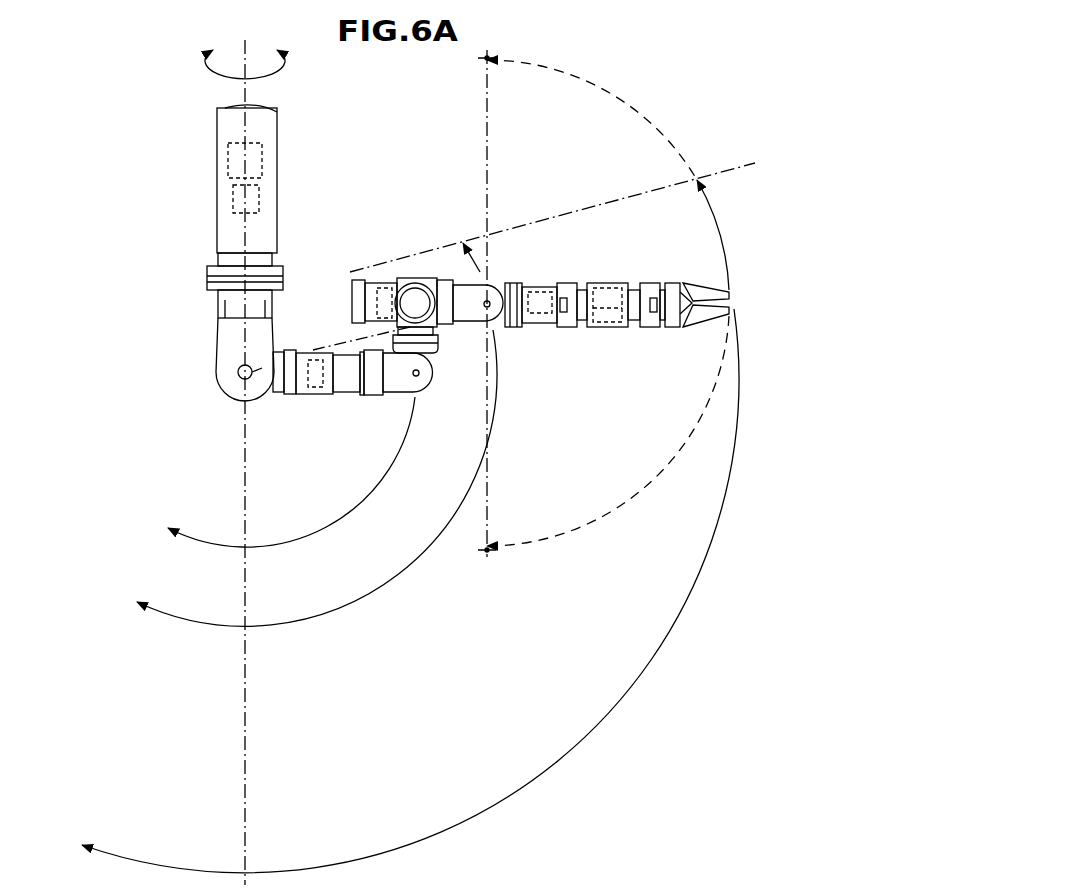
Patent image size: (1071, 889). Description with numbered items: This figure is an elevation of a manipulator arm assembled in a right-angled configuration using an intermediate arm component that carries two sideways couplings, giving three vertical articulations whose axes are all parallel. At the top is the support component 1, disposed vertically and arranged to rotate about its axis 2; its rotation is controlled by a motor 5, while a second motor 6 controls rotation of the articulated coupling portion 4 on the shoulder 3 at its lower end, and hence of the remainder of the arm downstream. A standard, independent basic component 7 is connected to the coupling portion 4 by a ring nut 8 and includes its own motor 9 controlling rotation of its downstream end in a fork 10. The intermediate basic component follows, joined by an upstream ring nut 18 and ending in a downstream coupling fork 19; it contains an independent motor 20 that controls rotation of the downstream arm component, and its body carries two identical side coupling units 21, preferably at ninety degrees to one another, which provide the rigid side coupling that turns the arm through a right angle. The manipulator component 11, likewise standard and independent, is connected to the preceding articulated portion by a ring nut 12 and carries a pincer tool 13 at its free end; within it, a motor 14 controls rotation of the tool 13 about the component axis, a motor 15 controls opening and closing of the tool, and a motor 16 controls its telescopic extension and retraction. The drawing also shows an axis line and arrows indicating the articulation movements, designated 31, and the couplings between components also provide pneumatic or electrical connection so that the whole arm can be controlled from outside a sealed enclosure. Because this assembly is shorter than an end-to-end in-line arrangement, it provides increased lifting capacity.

The support component 1 is at (213, 221).
The axis 2 is at (250, 107).
The shoulder 3 is at (232, 383).
The articulated coupling portion 4 is at (277, 393).
The motor 5 is at (228, 163).
The motor 6 is at (262, 195).
The basic component 7 is at (343, 399).
The ring nut 8 is at (287, 356).
The motor 9 is at (318, 395).
The fork 10 is at (405, 393).
The manipulator component 11 is at (592, 335).
The ring nut 12 is at (515, 283).
The pincer tool 13 is at (697, 313).
The motor 14 is at (537, 322).
The motor 15 is at (608, 287).
The motor 16 is at (620, 328).
The upstream ring nut 18 is at (437, 347).
The downstream coupling fork 19 is at (474, 302).
The independent motor 20 is at (378, 288).
The intermediate unit 21 is at (397, 283).
The joint axis 31 is at (426, 270).